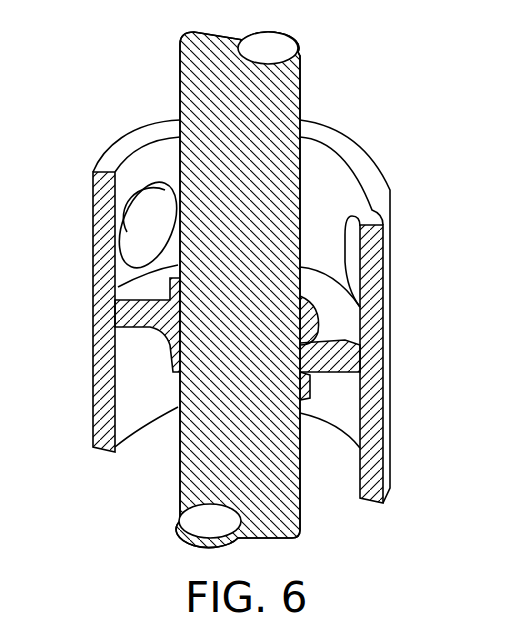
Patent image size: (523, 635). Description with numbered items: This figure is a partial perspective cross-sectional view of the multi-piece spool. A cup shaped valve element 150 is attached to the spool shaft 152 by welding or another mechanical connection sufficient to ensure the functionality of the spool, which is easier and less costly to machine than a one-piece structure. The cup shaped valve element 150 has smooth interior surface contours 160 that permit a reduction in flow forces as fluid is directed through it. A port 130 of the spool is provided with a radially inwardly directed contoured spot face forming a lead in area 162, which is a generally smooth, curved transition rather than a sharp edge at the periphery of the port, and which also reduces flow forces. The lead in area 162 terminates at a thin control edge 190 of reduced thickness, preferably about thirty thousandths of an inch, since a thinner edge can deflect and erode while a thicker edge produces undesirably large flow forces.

The port 130 is at (155, 181).
The cup shaped valve element 150 is at (390, 448).
The spool shaft 152 is at (300, 80).
The smooth interior surface contours 160 is at (383, 369).
The lead in area 162 is at (122, 282).
The control edge 190 is at (147, 235).